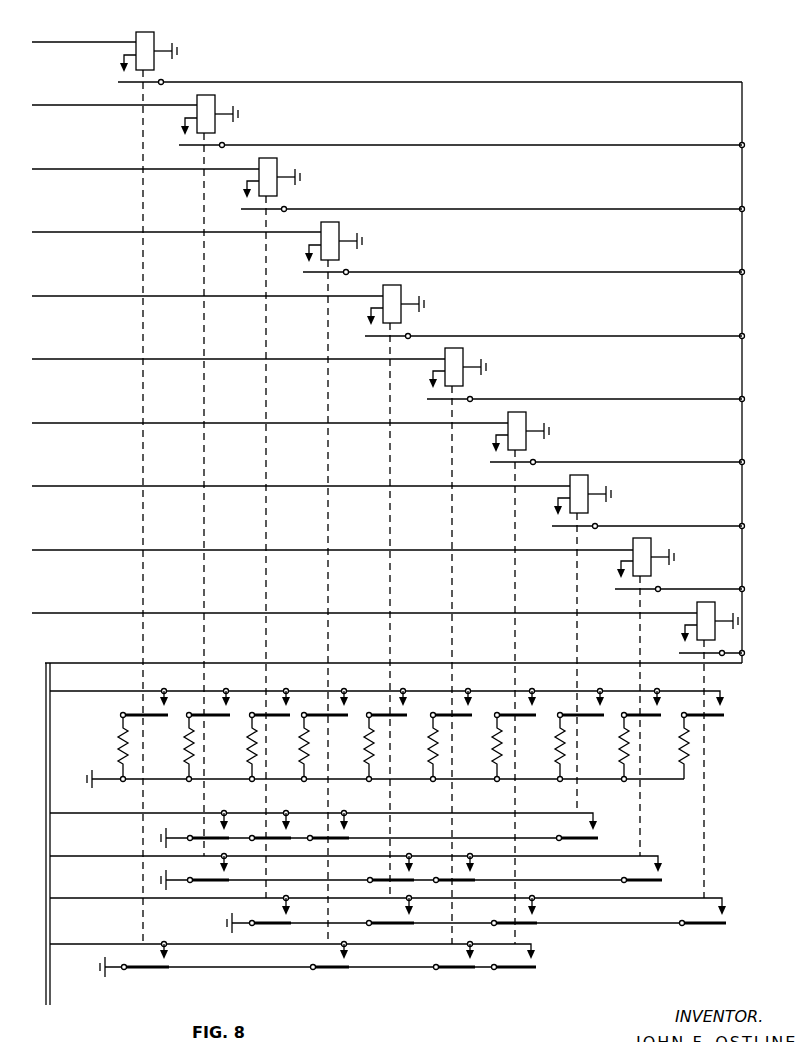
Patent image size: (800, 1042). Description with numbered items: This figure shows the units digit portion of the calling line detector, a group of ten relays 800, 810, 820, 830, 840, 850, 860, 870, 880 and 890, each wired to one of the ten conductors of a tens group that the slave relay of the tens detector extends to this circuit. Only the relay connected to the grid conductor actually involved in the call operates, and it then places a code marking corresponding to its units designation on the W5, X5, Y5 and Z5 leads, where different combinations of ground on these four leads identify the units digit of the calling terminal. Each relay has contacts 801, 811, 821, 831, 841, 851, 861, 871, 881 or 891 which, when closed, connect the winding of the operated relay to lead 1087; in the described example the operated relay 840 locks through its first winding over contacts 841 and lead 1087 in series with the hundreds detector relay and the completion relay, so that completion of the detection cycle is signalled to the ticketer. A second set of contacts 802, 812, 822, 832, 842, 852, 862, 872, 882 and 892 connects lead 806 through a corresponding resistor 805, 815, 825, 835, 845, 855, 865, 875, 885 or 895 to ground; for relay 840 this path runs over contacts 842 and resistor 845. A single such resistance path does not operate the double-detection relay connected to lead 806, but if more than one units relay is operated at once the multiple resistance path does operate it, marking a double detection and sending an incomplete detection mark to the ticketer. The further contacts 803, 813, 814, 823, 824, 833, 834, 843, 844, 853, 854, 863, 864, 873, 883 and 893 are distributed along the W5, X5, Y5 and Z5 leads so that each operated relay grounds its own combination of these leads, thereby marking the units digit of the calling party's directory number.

The units digit detector relay 800 is at (156, 41).
The units digit detector relay 810 is at (217, 104).
The units digit detector relay 820 is at (279, 167).
The units digit detector relay 830 is at (341, 231).
The units digit detector relay 840 is at (403, 294).
The units digit detector relay 850 is at (465, 357).
The units digit detector relay 860 is at (528, 421).
The units digit detector relay 870 is at (590, 484).
The units digit detector relay 880 is at (653, 547).
The units digit detector relay 890 is at (716, 605).
The output line 801 is at (117, 82).
The output line 811 is at (178, 145).
The output line 821 is at (240, 209).
The output line 831 is at (302, 272).
The contacts 841 is at (364, 336).
The output line 851 is at (426, 399).
The output line 861 is at (489, 462).
The output line 871 is at (551, 526).
The output line 881 is at (614, 589).
The output line 891 is at (678, 653).
The diode 802 is at (162, 713).
The diode 812 is at (224, 713).
The diode 822 is at (284, 713).
The diode 832 is at (342, 713).
The contacts 842 is at (401, 713).
The diode 852 is at (466, 713).
The diode 862 is at (530, 713).
The diode 872 is at (598, 713).
The diode 882 is at (655, 713).
The diode 892 is at (718, 713).
The resistor 805 is at (127, 750).
The resistor 815 is at (193, 750).
The resistor 825 is at (256, 750).
The resistor 835 is at (308, 750).
The resistor 845 is at (373, 750).
The resistor 855 is at (437, 750).
The resistor 865 is at (501, 750).
The resistor 875 is at (564, 750).
The resistor 885 is at (628, 750).
The resistor 895 is at (688, 750).
The diode 803 is at (158, 961).
The diode 813 is at (218, 832).
The diode 814 is at (218, 874).
The diode 823 is at (280, 832).
The diode 824 is at (280, 917).
The diode 833 is at (338, 832).
The diode 834 is at (338, 961).
The diode 843 is at (403, 874).
The diode 844 is at (403, 917).
The diode 853 is at (464, 874).
The diode 854 is at (464, 961).
The diode 863 is at (526, 917).
The diode 864 is at (525, 961).
The diode 873 is at (587, 832).
The diode 883 is at (652, 874).
The diode 893 is at (716, 917).
The lead 806 is at (63, 687).
The lead 1087 is at (58, 660).
The W5 lead W5 is at (59, 813).
The X5 lead X5 is at (59, 856).
The Y5 lead Y5 is at (59, 898).
The Z5 lead Z5 is at (59, 944).